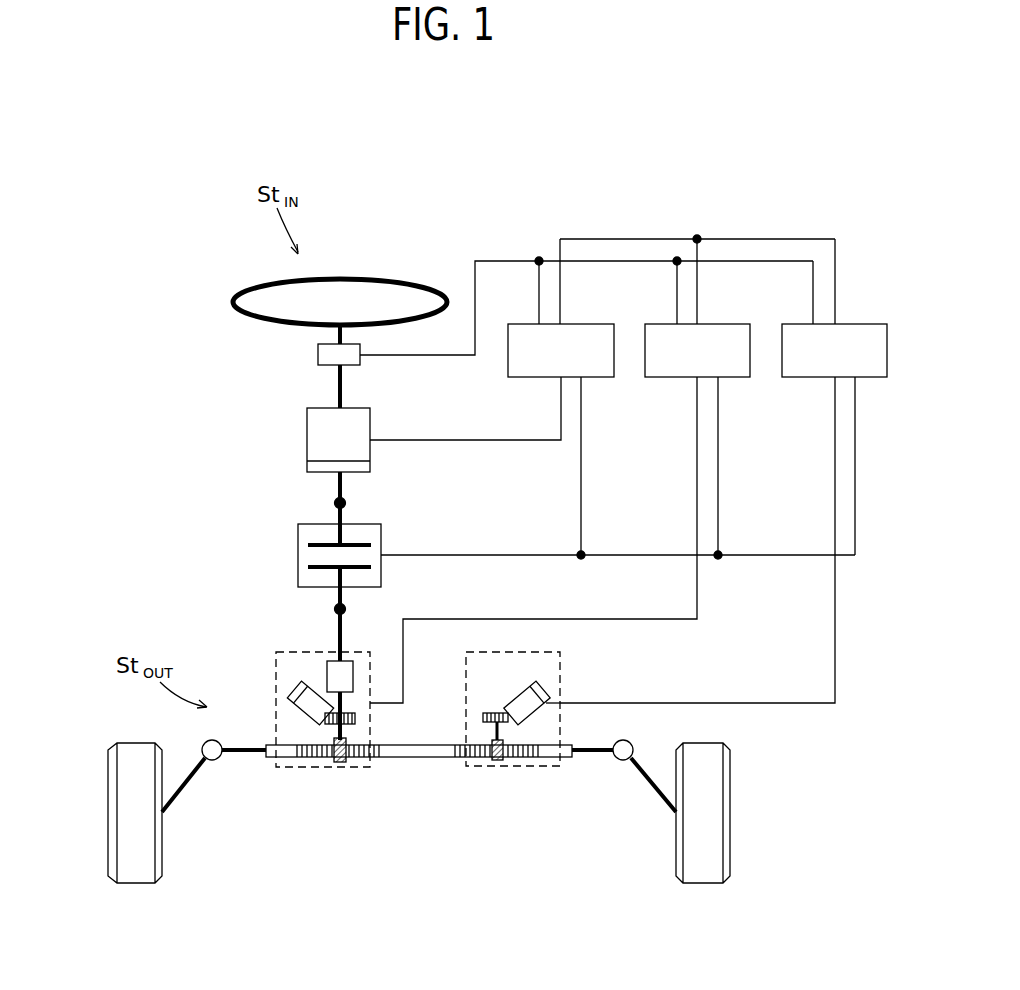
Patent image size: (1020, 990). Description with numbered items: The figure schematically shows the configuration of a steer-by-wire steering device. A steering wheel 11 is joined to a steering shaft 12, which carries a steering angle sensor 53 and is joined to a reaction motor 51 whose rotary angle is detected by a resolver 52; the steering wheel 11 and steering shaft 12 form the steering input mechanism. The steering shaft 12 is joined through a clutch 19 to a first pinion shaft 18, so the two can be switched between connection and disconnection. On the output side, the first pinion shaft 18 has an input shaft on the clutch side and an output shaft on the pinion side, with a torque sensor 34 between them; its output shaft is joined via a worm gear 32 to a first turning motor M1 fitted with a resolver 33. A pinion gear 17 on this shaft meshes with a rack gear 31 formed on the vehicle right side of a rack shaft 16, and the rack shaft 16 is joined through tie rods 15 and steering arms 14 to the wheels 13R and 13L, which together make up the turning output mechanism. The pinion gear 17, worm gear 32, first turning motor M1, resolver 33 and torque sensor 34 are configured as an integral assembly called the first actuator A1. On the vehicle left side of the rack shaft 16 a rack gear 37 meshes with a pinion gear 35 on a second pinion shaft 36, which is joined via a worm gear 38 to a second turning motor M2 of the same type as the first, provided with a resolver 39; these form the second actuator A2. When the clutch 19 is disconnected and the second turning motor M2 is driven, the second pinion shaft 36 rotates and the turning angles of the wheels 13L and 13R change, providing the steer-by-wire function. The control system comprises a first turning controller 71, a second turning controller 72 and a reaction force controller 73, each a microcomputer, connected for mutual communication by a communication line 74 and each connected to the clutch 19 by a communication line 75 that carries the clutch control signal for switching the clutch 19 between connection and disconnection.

The steering wheel 11 is at (248, 287).
The steering shaft 12 is at (343, 380).
The steering angle sensor 53 is at (318, 354).
The reaction motor 51 is at (307, 436).
The resolver 52 is at (307, 466).
The clutch 19 is at (298, 553).
The first pinion shaft 18 is at (343, 632).
The torque sensor 34 is at (330, 660).
The resolver 33 is at (299, 686).
The first turning motor M1 is at (292, 700).
The worm gear 32 is at (328, 728).
The pinion gear 17 is at (338, 763).
The rack gear 31 is at (358, 763).
The rack shaft 16 is at (415, 758).
The tie rod 15 is at (243, 753).
The steering arm 14 is at (183, 789).
The wheel 13R is at (128, 810).
The wheel 13L is at (708, 806).
The first actuator A1 is at (370, 720).
The second actuator A2 is at (560, 720).
The resolver 39 is at (540, 690).
The second turning motor M2 is at (552, 700).
The worm gear 38 is at (490, 703).
The rack gear 37 is at (478, 763).
The second pinion shaft 36 is at (503, 732).
The pinion gear 35 is at (497, 762).
The reaction force controller 73 is at (582, 323).
The first turning controller 71 is at (718, 323).
The second turning controller 72 is at (855, 323).
The communication line 74 is at (720, 238).
The communication line 75 is at (477, 553).